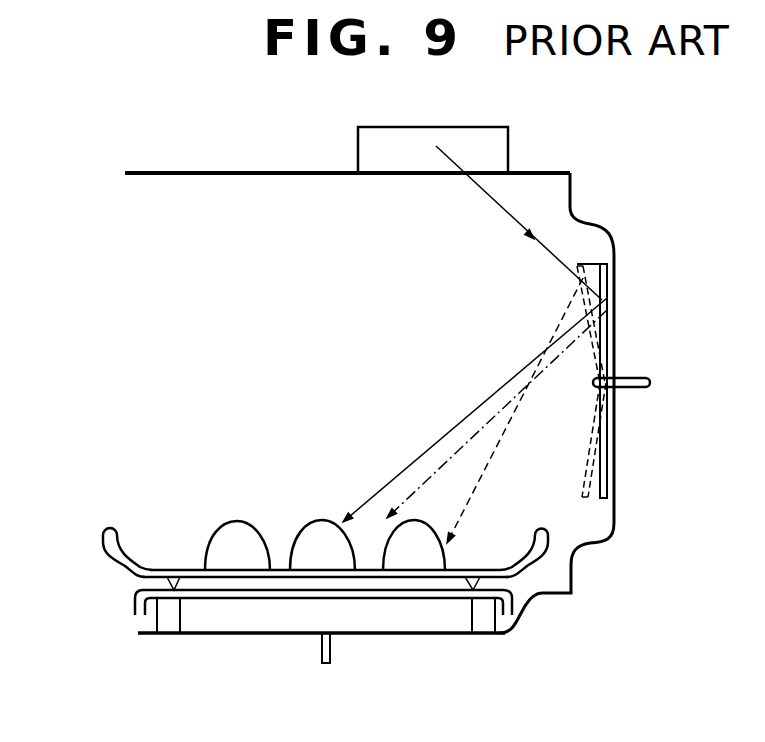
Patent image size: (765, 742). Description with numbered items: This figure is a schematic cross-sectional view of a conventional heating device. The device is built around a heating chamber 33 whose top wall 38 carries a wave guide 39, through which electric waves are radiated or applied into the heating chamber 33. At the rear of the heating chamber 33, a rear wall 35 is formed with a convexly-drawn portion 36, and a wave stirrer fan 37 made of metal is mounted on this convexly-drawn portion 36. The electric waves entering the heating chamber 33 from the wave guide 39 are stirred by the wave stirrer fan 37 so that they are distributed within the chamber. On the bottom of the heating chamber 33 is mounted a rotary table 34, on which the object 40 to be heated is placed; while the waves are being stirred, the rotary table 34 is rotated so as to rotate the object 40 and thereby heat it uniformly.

The heating chamber 33 is at (255, 240).
The rotary table 34 is at (120, 547).
The rear wall 35 is at (573, 188).
The convexly-drawn portion 36 is at (596, 516).
The wave stirrer fan 37 is at (607, 428).
The top wall 38 is at (178, 172).
The wave guide 39 is at (468, 127).
The object to be heated 40 is at (410, 560).